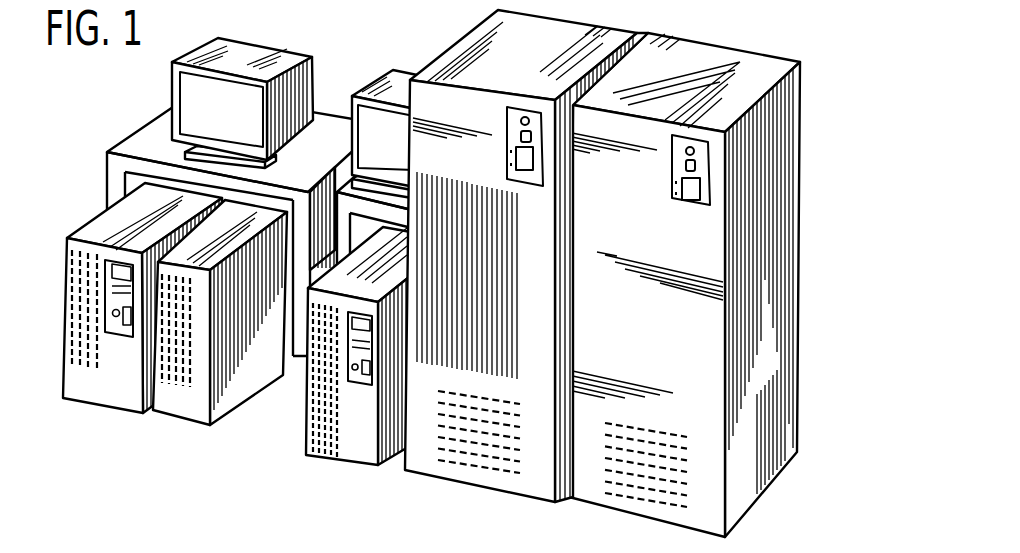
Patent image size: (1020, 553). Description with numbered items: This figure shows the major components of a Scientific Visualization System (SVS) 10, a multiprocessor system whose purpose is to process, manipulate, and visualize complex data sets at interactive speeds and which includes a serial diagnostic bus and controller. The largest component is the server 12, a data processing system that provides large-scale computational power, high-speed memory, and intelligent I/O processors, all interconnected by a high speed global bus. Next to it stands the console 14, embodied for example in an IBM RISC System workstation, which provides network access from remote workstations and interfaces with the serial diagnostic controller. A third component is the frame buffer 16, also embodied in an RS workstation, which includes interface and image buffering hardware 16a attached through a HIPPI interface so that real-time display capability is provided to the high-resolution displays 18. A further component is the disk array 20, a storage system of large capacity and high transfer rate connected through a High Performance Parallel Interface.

The Scientific Visualization System 10 is at (88, 143).
The server 12 is at (510, 493).
The console 14 is at (350, 462).
The frame buffer 16 is at (97, 403).
The interface and image buffering hardware 16a is at (232, 408).
The high-resolution displays 18 is at (268, 44).
The disk array 20 is at (793, 453).